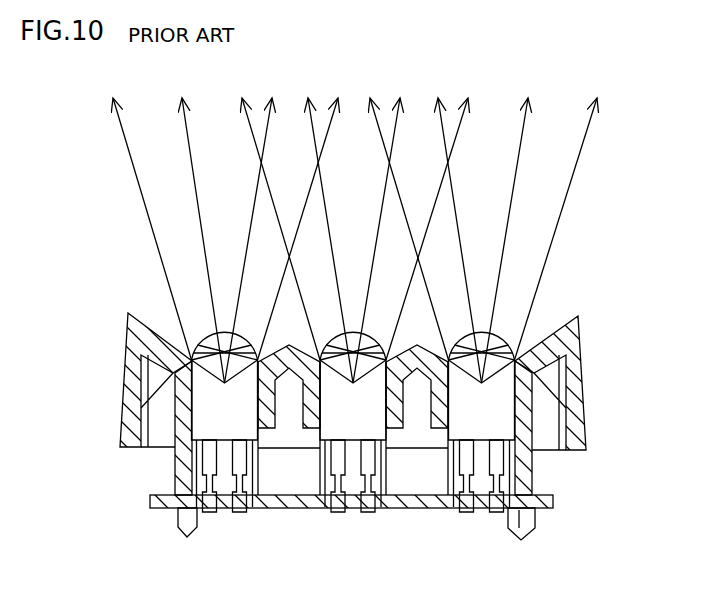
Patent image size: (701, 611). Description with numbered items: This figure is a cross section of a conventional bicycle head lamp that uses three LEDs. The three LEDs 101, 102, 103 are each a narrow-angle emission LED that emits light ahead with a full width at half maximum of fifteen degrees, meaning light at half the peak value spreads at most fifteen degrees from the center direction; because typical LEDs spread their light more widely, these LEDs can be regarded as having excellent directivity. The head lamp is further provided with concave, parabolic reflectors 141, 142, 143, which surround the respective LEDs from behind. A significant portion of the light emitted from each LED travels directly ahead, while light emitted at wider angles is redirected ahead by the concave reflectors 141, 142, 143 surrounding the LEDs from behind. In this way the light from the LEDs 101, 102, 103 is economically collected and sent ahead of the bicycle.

The LED 101 is at (226, 415).
The LED 102 is at (355, 415).
The LED 103 is at (484, 415).
The concave reflector 141 is at (132, 385).
The concave reflector 142 is at (282, 372).
The concave reflector 143 is at (551, 335).